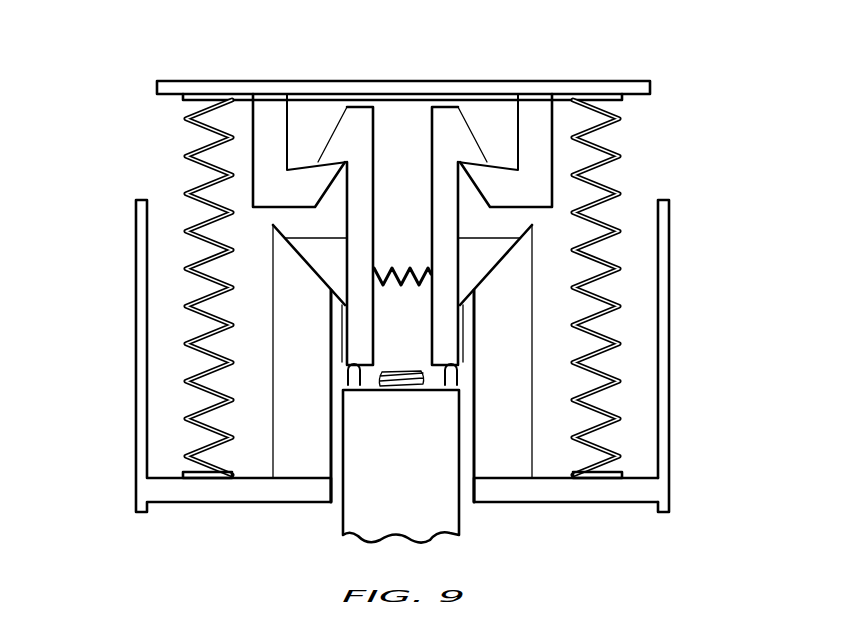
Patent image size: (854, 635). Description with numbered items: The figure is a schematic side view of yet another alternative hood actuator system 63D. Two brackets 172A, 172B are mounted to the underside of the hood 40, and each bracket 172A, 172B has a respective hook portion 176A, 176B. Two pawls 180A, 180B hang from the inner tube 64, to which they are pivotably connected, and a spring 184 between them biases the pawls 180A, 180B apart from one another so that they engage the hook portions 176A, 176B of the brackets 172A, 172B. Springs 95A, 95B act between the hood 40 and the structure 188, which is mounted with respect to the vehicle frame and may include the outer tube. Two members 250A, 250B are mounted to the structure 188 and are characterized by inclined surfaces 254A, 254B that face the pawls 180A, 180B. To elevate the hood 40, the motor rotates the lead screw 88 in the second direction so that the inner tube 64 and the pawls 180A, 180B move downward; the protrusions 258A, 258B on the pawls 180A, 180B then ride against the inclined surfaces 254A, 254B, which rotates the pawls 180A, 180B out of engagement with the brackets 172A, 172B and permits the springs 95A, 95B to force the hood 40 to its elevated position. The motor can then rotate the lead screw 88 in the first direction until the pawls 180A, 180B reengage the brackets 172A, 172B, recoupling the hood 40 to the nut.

The hood 40 is at (337, 82).
The hood actuator system 63D is at (709, 107).
The inner tube 64 is at (414, 470).
The lead screw 88 is at (408, 368).
The springs 95A is at (187, 118).
The compression spring 95B is at (620, 138).
The bracket 172A is at (267, 135).
The bracket 172B is at (538, 135).
The hook portion 176A is at (302, 182).
The hook portion 176B is at (503, 182).
The pawl 180A is at (377, 182).
The pawl 180B is at (424, 185).
The spring 184 is at (408, 266).
The structure 188 is at (667, 350).
The member 250A is at (292, 400).
The member 250B is at (513, 400).
The inclined surface 254A is at (290, 273).
The inclined surface 254B is at (515, 273).
The protrusion 258A is at (325, 262).
The protrusion 258B is at (480, 262).